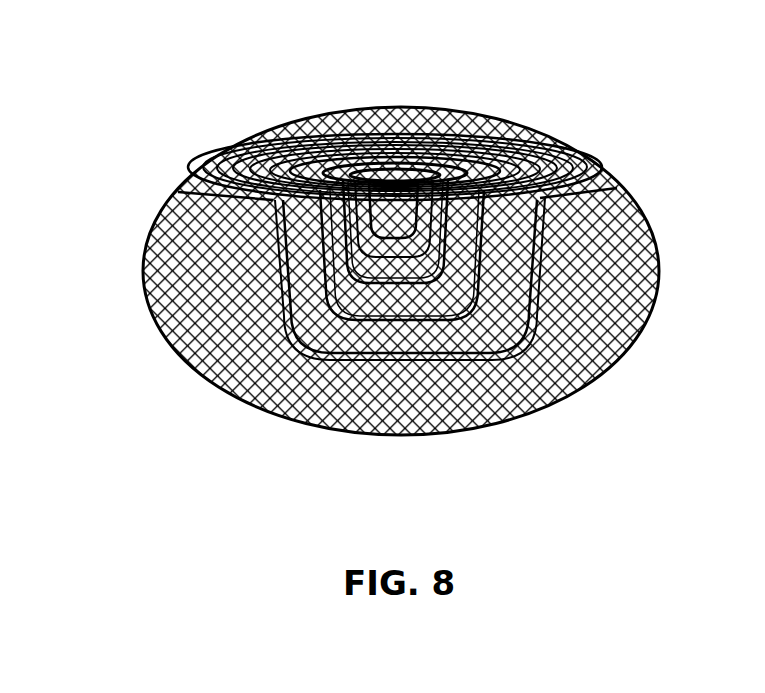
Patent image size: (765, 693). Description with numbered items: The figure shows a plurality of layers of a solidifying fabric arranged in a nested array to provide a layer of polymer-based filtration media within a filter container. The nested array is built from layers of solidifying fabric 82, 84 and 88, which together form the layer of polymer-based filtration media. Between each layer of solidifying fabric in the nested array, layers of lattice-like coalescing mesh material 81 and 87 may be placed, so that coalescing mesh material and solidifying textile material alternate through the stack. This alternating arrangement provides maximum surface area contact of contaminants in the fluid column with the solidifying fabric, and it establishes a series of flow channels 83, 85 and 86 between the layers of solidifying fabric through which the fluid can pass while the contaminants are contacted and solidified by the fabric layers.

The lattice-like coalescing mesh material 81 is at (390, 195).
The solidifying fabric 82 is at (265, 147).
The flow channel 83 is at (470, 165).
The solidifying fabric 84 is at (250, 160).
The flow channel 85 is at (582, 158).
The flow channel 86 is at (215, 187).
The lattice-like coalescing mesh material 87 is at (477, 407).
The solidifying fabric 88 is at (280, 280).